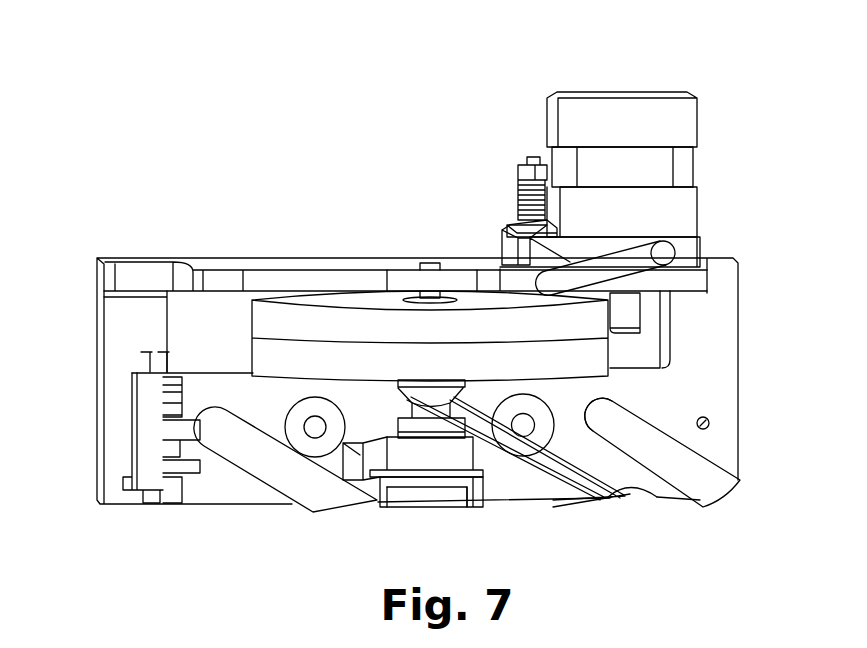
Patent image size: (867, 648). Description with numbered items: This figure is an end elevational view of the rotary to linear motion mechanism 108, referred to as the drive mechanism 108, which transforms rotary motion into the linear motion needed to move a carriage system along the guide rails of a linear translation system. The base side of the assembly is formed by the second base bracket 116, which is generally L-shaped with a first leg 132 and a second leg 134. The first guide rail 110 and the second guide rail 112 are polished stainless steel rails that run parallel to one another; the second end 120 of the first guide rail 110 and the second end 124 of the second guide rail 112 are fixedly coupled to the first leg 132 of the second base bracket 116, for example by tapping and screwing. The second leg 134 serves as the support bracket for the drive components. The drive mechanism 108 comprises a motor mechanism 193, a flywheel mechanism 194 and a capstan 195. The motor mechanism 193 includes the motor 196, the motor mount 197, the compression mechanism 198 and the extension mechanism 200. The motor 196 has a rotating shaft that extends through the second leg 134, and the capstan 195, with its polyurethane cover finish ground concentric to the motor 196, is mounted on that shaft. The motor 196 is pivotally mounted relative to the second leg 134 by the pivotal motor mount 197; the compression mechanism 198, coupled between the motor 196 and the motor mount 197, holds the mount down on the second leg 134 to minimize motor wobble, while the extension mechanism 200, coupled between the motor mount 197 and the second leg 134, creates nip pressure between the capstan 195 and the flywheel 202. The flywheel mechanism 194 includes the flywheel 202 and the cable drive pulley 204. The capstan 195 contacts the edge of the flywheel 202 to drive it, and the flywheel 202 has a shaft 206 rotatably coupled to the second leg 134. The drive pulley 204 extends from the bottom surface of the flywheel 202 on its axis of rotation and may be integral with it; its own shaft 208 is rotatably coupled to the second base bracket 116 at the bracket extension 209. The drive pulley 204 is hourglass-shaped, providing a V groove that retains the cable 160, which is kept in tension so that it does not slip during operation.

The rotary to linear motion mechanism 108 is at (318, 133).
The first guide rail 110 is at (233, 467).
The second guide rail 112 is at (700, 468).
The second base bracket 116 is at (737, 310).
The second end 120 is at (217, 453).
The second end 124 is at (620, 420).
The first leg 132 is at (118, 385).
The second leg 134 is at (282, 257).
The cable 160 is at (613, 487).
The motor mechanism 193 is at (702, 98).
The flywheel mechanism 194 is at (253, 348).
The capstan 195 is at (640, 317).
The motor 196 is at (687, 163).
The motor mount 197 is at (697, 247).
The compression mechanism 198 is at (513, 168).
The extension mechanism 200 is at (510, 230).
The flywheel 202 is at (262, 320).
The cable drive pulley 204 is at (405, 428).
The shaft 206 is at (420, 277).
The shaft 208 is at (431, 478).
The bracket extension 209 is at (458, 502).